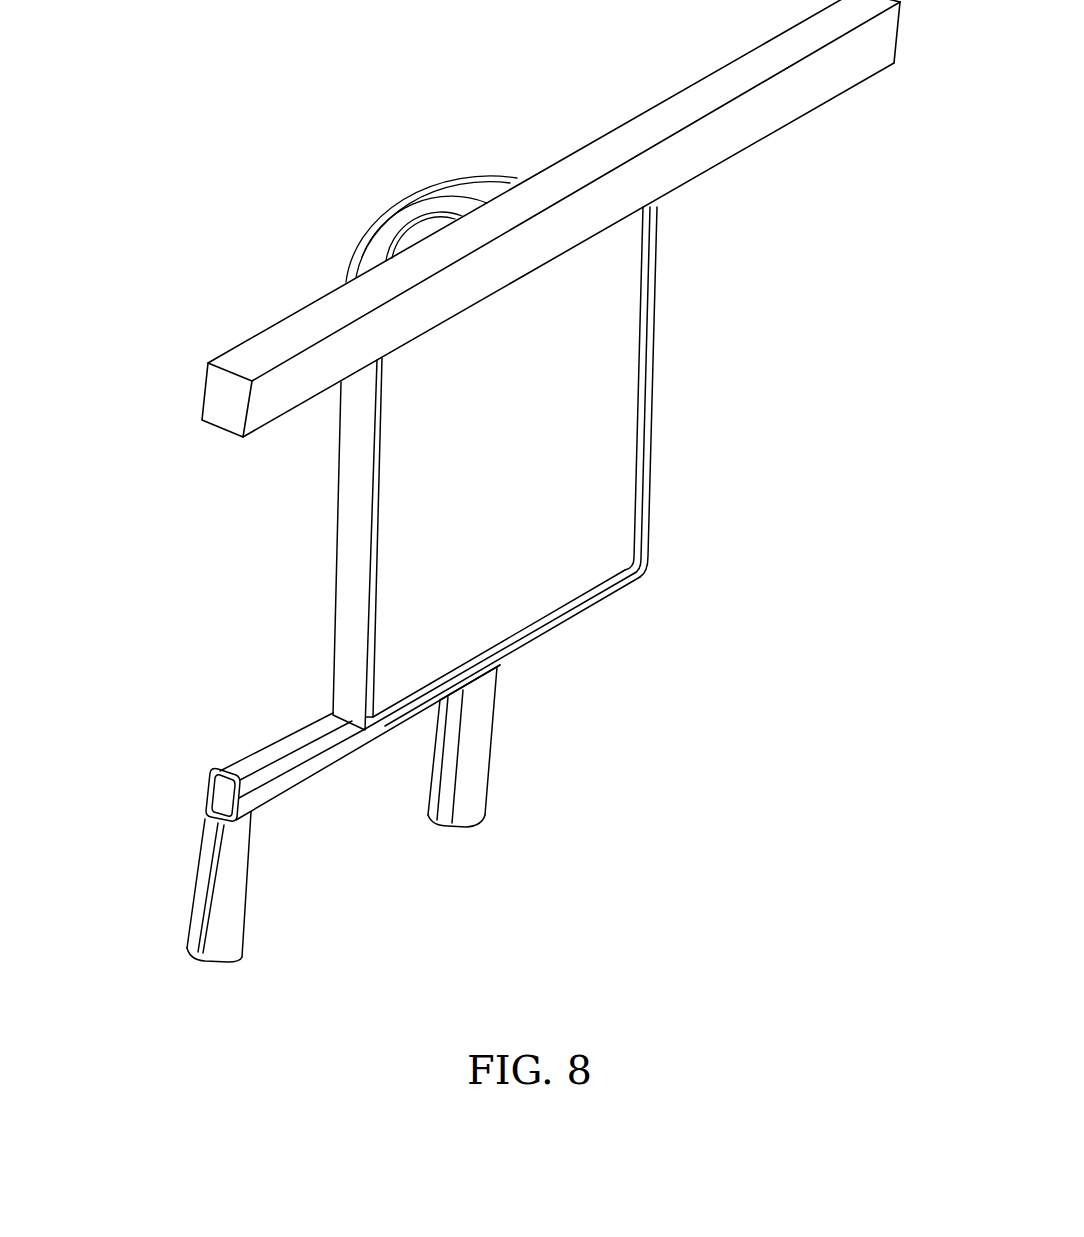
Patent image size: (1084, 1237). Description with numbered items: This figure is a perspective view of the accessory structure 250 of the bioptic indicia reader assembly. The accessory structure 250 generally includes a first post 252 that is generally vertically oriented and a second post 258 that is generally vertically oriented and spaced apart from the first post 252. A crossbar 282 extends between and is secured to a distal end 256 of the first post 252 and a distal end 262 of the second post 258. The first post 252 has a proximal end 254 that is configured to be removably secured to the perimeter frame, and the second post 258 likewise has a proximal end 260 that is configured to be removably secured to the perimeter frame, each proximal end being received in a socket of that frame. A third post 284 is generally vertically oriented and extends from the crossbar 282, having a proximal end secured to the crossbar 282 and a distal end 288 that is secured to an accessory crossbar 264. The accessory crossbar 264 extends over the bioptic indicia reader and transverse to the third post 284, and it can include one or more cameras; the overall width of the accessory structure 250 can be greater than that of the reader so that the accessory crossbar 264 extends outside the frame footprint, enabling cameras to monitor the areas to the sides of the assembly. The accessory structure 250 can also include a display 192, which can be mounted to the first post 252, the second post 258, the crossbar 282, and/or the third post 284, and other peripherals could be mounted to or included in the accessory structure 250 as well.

The accessory structure 250 is at (256, 148).
The accessory crossbar 264 is at (822, 78).
The distal end of third post 288 is at (524, 165).
The third post 284 is at (422, 214).
The display 192 is at (650, 381).
The crossbar 282 is at (332, 746).
The distal end of first post 256 is at (192, 819).
The distal end of second post 262 is at (517, 668).
The first post 252 is at (235, 877).
The proximal end of first post 254 is at (182, 947).
The second post 258 is at (470, 741).
The proximal end of second post 260 is at (503, 823).